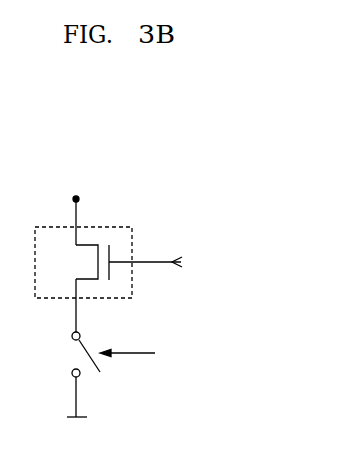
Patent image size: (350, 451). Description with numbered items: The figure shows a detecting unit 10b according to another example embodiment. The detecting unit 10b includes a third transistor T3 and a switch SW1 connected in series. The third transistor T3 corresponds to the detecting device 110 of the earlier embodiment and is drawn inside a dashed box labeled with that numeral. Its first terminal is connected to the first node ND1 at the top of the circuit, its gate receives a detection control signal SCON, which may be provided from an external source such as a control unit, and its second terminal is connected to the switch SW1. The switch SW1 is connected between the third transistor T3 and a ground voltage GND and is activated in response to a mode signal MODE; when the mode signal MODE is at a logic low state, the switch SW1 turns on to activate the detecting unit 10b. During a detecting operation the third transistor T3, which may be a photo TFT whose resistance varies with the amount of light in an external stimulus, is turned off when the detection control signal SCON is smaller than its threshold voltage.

The detecting unit 10b is at (168, 298).
The detecting device 110 is at (139, 250).
The first node ND1 is at (75, 186).
The third transistor T3 is at (80, 262).
The detection control signal SCON is at (176, 263).
The switch SW1 is at (66, 354).
The mode signal MODE is at (159, 354).
The ground voltage GND is at (77, 410).